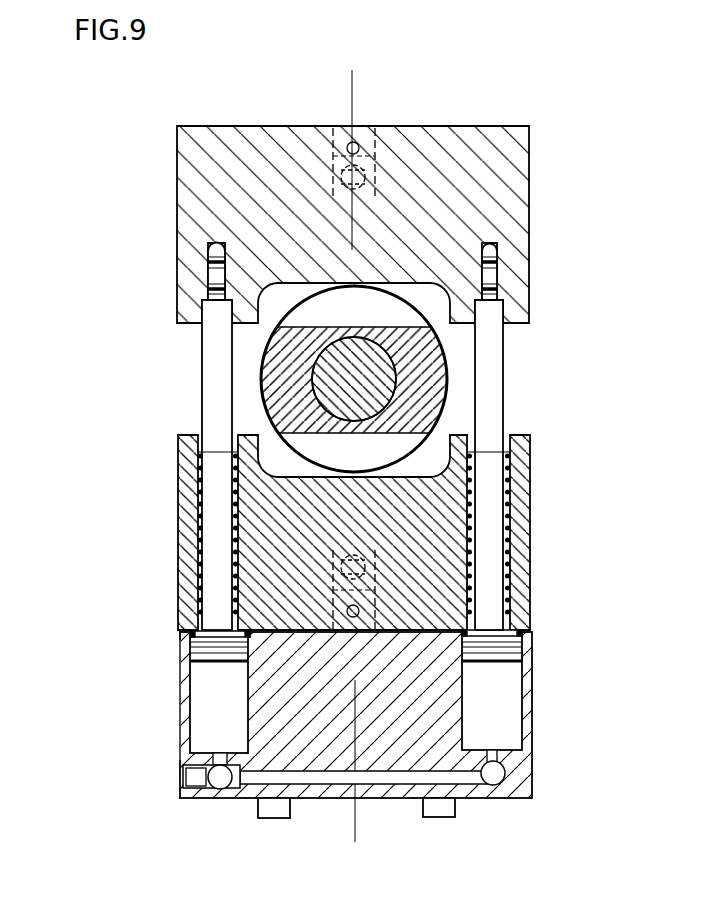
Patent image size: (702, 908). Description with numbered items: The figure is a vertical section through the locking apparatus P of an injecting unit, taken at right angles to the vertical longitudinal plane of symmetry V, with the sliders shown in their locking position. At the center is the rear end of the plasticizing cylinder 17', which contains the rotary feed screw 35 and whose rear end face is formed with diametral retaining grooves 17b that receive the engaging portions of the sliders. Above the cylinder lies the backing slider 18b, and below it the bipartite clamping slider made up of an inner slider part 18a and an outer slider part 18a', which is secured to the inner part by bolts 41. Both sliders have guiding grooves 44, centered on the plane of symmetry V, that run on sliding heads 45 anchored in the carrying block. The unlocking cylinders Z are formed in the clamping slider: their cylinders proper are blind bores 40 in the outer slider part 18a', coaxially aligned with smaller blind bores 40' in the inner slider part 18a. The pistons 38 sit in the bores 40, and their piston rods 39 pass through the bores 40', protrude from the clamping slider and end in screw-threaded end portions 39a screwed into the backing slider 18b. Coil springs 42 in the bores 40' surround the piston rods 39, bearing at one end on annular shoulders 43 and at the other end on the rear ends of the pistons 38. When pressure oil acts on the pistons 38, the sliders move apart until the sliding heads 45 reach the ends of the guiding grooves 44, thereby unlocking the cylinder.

The retaining grooves 17b is at (374, 320).
The plasticizing cylinder 17' is at (446, 380).
The rotary feed screw 35 is at (378, 380).
The backing slider 18b is at (533, 211).
The inner slider part 18a is at (307, 532).
The outer slider part 18a' is at (304, 715).
The pistons 38 is at (500, 636).
The piston rods 39 is at (490, 488).
The screw-threaded end portions 39a is at (488, 278).
The blind bores 40 is at (316, 699).
The blind bores 40' is at (407, 501).
The bolts 41 is at (443, 808).
The coil springs 42 is at (198, 532).
The annular shoulders 43 is at (195, 433).
The guiding grooves 44 is at (350, 145).
The sliding heads 45 is at (378, 176).
The locking apparatus P is at (487, 124).
The vertical longitudinal plane of symmetry V is at (353, 457).
The unlocking cylinders Z is at (184, 657).